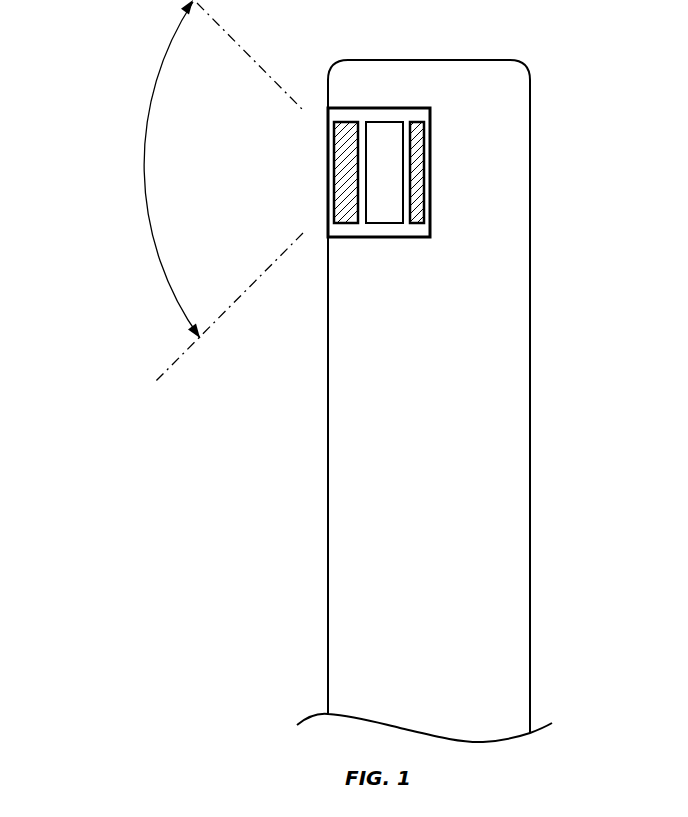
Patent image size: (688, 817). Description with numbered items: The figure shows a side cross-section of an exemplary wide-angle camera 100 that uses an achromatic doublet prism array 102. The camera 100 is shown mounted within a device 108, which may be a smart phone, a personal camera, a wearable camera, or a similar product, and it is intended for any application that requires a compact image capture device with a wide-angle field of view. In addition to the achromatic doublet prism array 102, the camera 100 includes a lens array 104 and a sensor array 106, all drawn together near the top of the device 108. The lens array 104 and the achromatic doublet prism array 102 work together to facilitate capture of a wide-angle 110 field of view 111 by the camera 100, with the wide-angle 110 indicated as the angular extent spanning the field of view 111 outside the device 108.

The wide-angle camera 100 is at (455, 170).
The achromatic doublet prism array 102 is at (347, 120).
The lens array 104 is at (392, 127).
The sensor array 106 is at (422, 128).
The device 108 is at (510, 462).
The wide-angle 110 is at (143, 145).
The field of view 111 is at (33, 233).